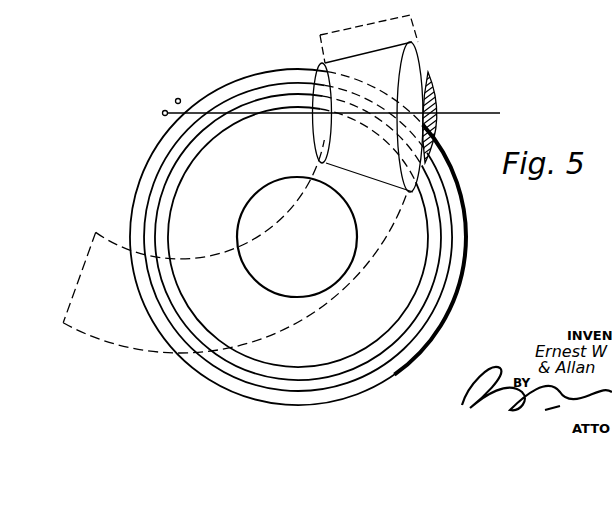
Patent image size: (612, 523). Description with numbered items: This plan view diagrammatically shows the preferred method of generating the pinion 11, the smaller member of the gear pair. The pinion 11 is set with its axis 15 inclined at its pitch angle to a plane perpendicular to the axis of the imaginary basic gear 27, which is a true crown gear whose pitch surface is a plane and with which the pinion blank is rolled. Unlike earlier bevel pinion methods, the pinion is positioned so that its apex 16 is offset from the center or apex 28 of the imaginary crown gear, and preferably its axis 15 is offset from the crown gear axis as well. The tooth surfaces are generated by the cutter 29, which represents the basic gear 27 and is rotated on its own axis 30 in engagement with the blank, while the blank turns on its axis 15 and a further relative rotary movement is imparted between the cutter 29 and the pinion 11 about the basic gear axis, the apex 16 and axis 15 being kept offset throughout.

The pinion 11 is at (413, 53).
The axis 15 is at (470, 113).
The apex 16 is at (162, 113).
The imaginary basic gear 27 is at (82, 292).
The apex 28 is at (180, 98).
The cutter 29 is at (455, 290).
The axis 30 is at (299, 237).